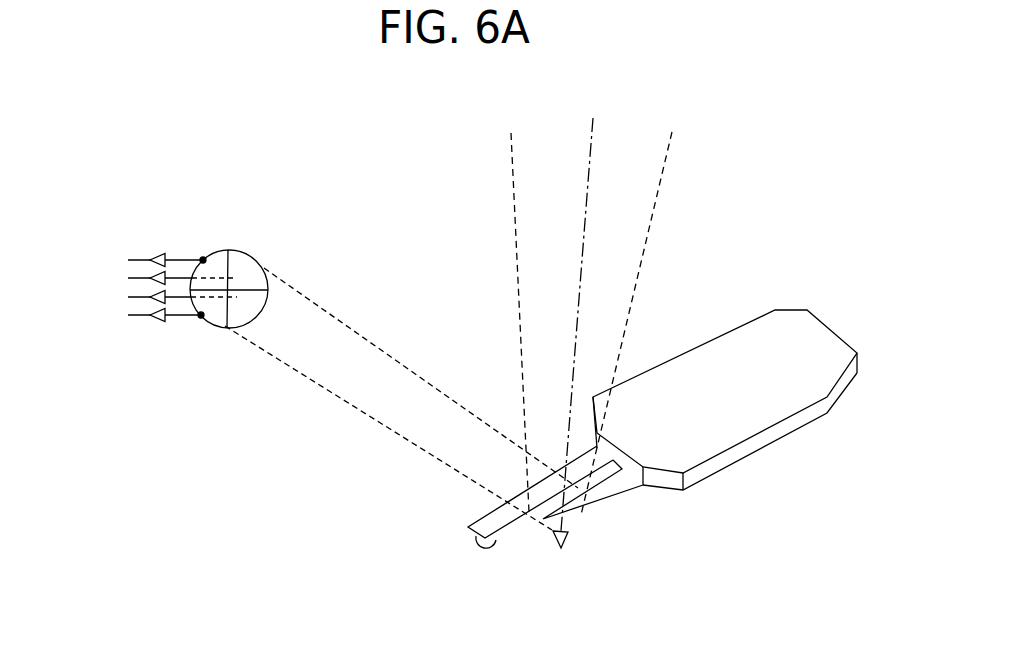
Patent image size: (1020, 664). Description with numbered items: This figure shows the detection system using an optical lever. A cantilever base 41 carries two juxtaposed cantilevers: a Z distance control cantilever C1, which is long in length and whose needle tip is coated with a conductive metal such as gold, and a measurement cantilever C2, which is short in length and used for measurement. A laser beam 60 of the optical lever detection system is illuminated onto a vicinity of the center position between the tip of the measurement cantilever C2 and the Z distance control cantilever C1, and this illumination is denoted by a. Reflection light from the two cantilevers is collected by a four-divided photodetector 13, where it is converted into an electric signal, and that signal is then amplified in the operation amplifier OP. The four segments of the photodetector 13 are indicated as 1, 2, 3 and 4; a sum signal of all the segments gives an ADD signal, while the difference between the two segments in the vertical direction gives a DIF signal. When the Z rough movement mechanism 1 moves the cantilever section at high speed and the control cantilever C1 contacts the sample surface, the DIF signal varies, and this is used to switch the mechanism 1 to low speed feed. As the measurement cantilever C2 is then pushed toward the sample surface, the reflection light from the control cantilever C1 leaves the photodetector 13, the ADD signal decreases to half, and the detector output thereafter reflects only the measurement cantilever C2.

The four-divided photodetector 13 is at (252, 240).
The operation amplifier OP is at (160, 228).
The Z rough movement mechanism 1 is at (151, 254).
The second light beam 2 is at (146, 278).
The third light beam 3 is at (145, 300).
The fourth light beam 4 is at (150, 325).
The laser beam 60 is at (638, 193).
The illumination a is at (553, 538).
The cantilever base 41 is at (828, 322).
The Z distance control cantilever C1 is at (467, 530).
The measurement cantilever C2 is at (592, 517).